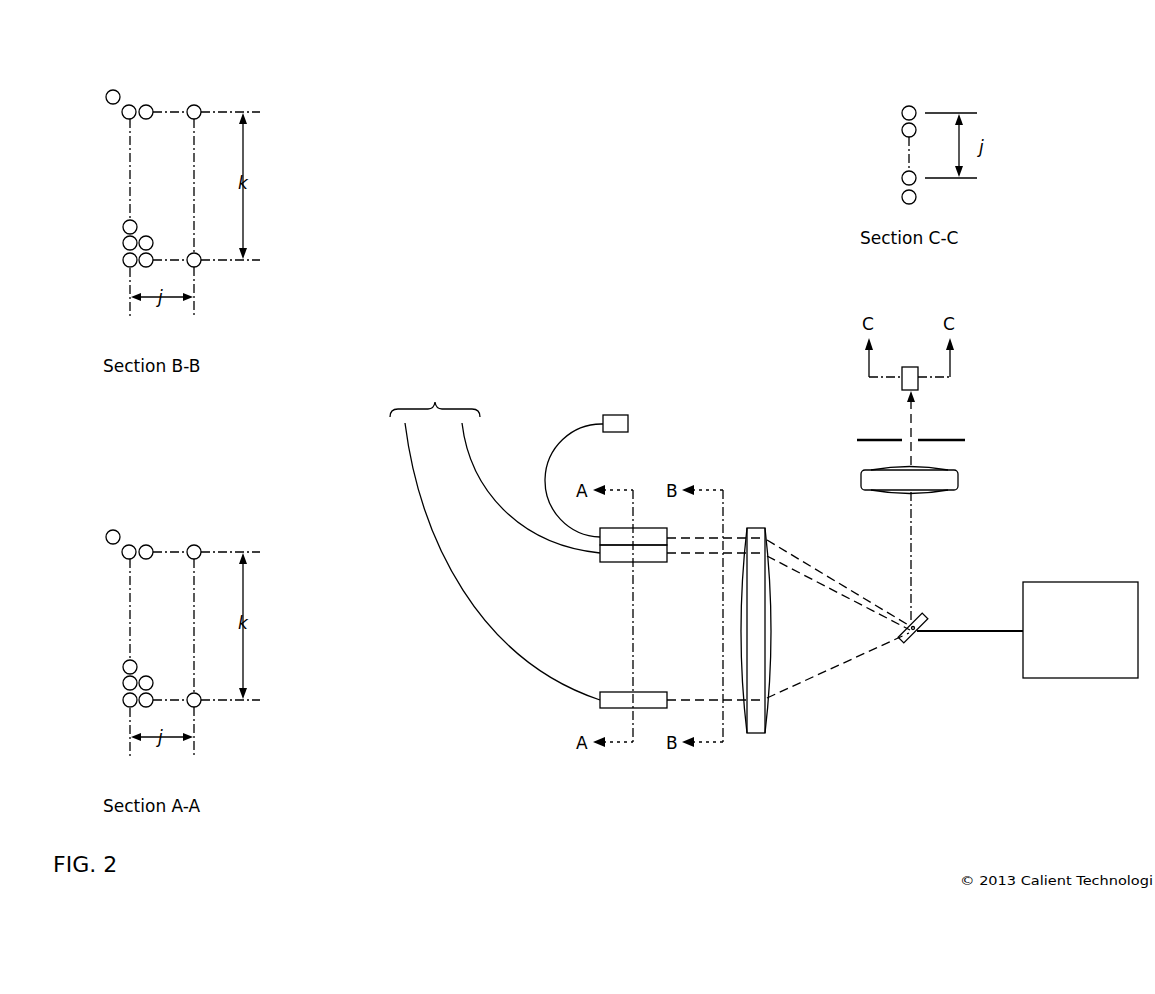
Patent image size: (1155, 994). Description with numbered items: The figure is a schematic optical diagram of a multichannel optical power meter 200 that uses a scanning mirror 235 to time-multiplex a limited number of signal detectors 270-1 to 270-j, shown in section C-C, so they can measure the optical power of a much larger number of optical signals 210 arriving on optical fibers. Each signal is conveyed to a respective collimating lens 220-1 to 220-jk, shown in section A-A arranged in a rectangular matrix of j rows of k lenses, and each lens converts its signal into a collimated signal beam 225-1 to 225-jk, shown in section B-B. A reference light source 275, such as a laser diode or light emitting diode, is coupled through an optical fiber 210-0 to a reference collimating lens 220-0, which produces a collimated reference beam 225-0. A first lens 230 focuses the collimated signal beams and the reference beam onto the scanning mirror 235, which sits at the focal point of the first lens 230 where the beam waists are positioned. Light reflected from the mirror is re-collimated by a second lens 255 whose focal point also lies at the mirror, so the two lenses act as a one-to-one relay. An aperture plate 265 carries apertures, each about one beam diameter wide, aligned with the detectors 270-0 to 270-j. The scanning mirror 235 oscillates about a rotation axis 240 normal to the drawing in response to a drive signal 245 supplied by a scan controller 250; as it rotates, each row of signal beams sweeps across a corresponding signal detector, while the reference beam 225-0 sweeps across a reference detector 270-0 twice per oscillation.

The multichannel optical power meter 200 is at (528, 203).
The optical signals 210 is at (495, 496).
The optical fiber 210-0 is at (568, 433).
The reference collimating lens 220-0 is at (117, 529).
The collimating lens 220-1 is at (131, 543).
The collimating lens 220-jk is at (197, 707).
The collimated reference beam 225-0 is at (117, 89).
The collimated signal beam 225-1 is at (131, 103).
The collimated signal beam 225-jk is at (197, 267).
The first lens 230 is at (760, 733).
The scanning mirror 235 is at (912, 638).
The rotation axis 240 is at (917, 640).
The drive signal 245 is at (945, 628).
The scan controller 250 is at (1080, 630).
The second lens 255 is at (945, 490).
The aperture plate 265 is at (965, 440).
The reference detector 270-0 is at (918, 197).
The signal detector 270-1 is at (902, 176).
The signal detector 270-j is at (902, 110).
The reference light source 275 is at (620, 415).